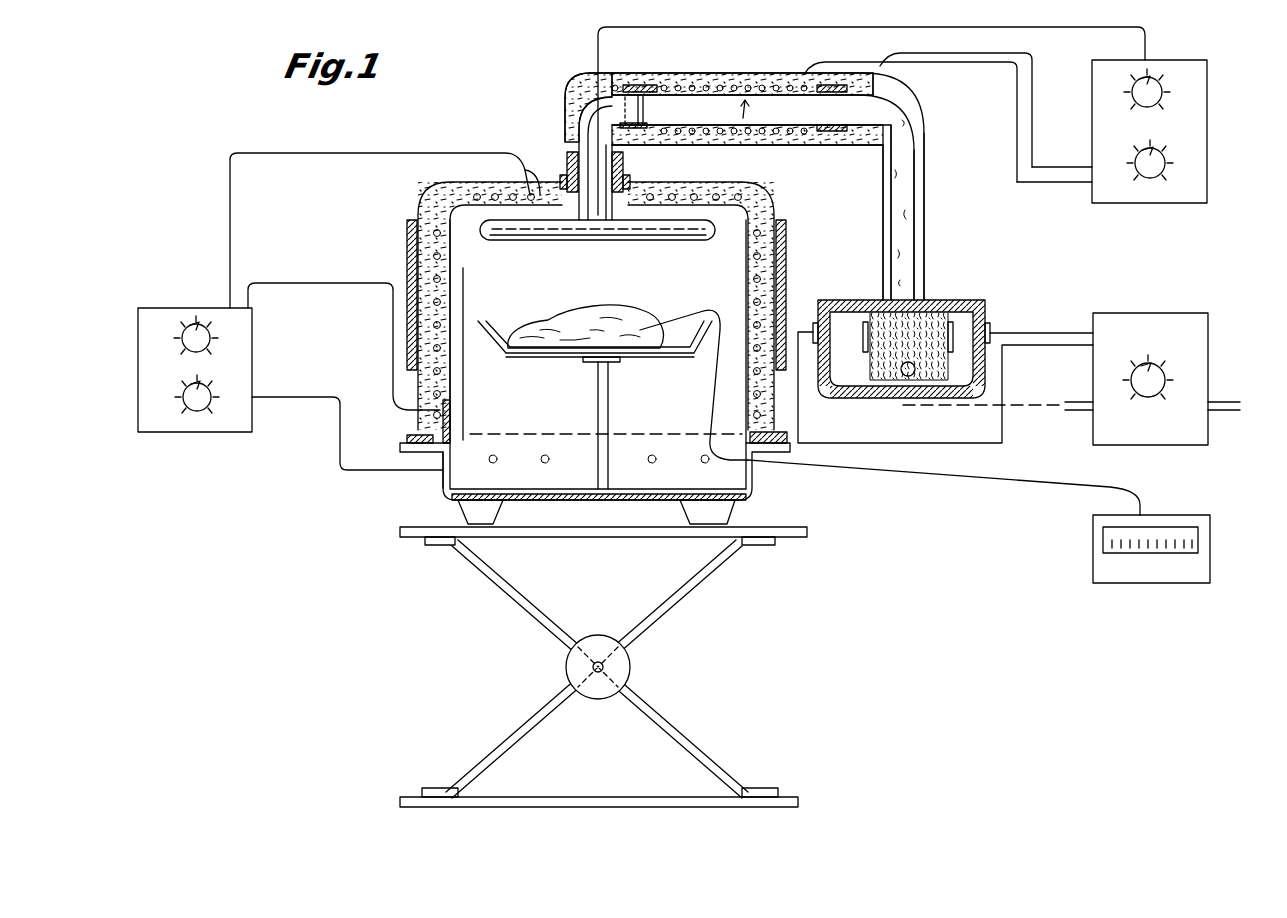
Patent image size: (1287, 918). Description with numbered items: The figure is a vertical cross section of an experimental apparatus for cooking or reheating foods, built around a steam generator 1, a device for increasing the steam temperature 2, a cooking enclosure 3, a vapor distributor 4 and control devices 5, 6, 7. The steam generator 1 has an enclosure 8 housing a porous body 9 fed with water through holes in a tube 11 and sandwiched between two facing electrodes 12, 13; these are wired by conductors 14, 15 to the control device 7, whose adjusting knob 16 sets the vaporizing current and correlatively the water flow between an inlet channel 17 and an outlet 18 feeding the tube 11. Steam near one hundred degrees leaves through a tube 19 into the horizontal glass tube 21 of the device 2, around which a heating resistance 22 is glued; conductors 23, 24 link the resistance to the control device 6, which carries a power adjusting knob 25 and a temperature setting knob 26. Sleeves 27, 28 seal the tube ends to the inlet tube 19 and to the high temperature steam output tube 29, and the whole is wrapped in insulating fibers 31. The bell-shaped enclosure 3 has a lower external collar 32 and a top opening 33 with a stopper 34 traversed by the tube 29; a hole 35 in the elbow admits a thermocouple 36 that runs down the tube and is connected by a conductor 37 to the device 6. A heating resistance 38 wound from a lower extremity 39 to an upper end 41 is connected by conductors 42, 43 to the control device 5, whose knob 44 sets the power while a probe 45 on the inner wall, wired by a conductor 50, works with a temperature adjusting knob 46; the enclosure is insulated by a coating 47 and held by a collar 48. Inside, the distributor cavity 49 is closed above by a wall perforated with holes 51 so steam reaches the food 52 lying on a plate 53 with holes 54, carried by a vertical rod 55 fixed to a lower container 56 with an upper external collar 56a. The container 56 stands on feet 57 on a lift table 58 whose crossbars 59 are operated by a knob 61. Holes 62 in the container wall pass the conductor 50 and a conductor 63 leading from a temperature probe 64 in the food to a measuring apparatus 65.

The steam generator 1 is at (952, 284).
The device for increasing the steam temperature 2 is at (752, 92).
The enclosure for cooking or reheating foods 3 is at (760, 266).
The vapor distributor 4 is at (539, 254).
The control device 5 is at (173, 460).
The control device 6 is at (1200, 136).
The control device 7 is at (1240, 446).
The enclosure 8 is at (858, 396).
The porous body 9 is at (898, 386).
The tube 11 is at (916, 378).
The electrode 12 is at (865, 320).
The electrode 13 is at (958, 320).
The electrical conductor 14 is at (1050, 348).
The electrical conductor 15 is at (1046, 332).
The adjusting knob 16 is at (1168, 372).
The inlet channel 17 is at (1226, 402).
The outlet 18 is at (1080, 412).
The tube 19 is at (925, 140).
The horizontal glass tube 21 is at (792, 86).
The heating resistance 22 is at (706, 86).
The electric conductor 23 is at (1032, 88).
The electric conductor 24 is at (1010, 68).
The adjusting knob 25 is at (1154, 172).
The knob 26 is at (1160, 96).
The sleeve 27 is at (850, 74).
The sleeve 28 is at (646, 86).
The high temperature steam output tube 29 is at (586, 125).
The coating of insulating fibers 31 is at (876, 90).
The external collar 32 is at (430, 448).
The opening 33 is at (630, 176).
The stopper 34 is at (566, 164).
The hole 35 is at (598, 100).
The thermocouple 36 is at (588, 112).
The conductor 37 is at (1050, 28).
The heating resistance 38 is at (445, 184).
The lower extremity 39 is at (443, 409).
The upper end 41 is at (525, 172).
The electrical conductor 42 is at (315, 283).
The electrical conductor 43 is at (345, 146).
The knob 44 is at (196, 326).
The probe 45 is at (463, 298).
The temperature adjusting knob 46 is at (200, 410).
The coating of insulating fibers 47 is at (420, 208).
The collar 48 is at (407, 232).
The cavity 49 is at (668, 236).
The conductor 50 is at (340, 462).
The holes 51 is at (634, 239).
The food to be cooked 52 is at (572, 320).
The horizontal plate 53 is at (502, 355).
The holes 54 is at (550, 358).
The vertical rod 55 is at (610, 402).
The lower container 56 is at (772, 484).
The upper external collar 56a is at (432, 468).
The feet 57 is at (470, 510).
The lift table 58 is at (500, 538).
The crossbars 59 is at (694, 582).
The knob 61 is at (632, 669).
The holes 62 is at (447, 476).
The conductor 63 is at (906, 474).
The temperature probe 64 is at (642, 326).
The apparatus 65 is at (1136, 584).